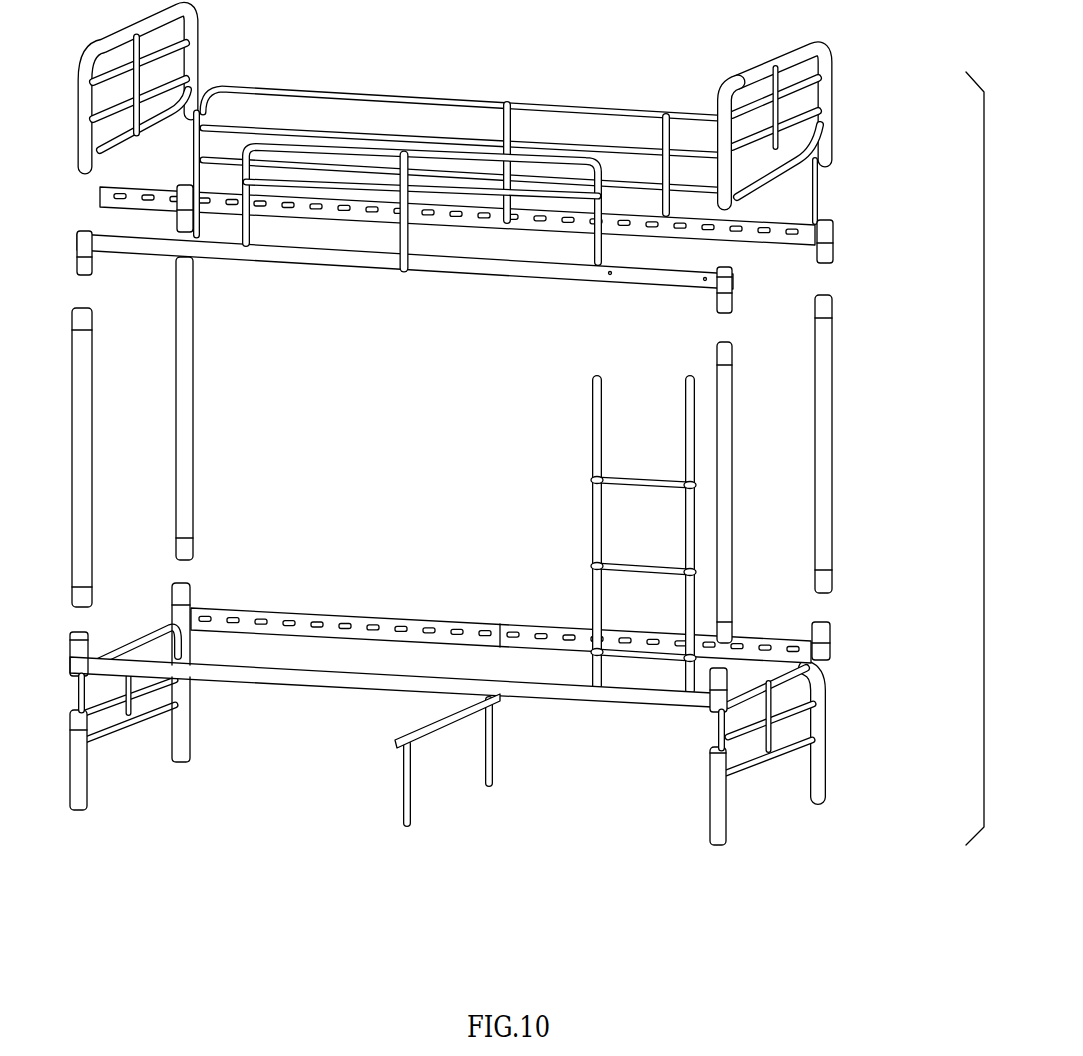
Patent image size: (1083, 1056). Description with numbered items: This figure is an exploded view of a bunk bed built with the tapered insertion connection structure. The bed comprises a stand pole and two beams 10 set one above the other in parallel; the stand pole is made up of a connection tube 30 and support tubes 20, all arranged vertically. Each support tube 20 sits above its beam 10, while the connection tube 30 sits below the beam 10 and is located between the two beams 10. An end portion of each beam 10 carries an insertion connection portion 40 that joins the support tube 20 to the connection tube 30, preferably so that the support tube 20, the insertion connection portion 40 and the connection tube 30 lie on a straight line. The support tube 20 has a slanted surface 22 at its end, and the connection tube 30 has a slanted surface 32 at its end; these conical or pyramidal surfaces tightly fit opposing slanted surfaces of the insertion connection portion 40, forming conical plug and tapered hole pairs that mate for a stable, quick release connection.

The beam 10 is at (503, 267).
The support tube 20 is at (827, 123).
The slanted surface 22 is at (732, 198).
The connection tube 30 is at (723, 493).
The slanted surface 32 is at (725, 355).
The insertion connection portion 40 is at (722, 305).